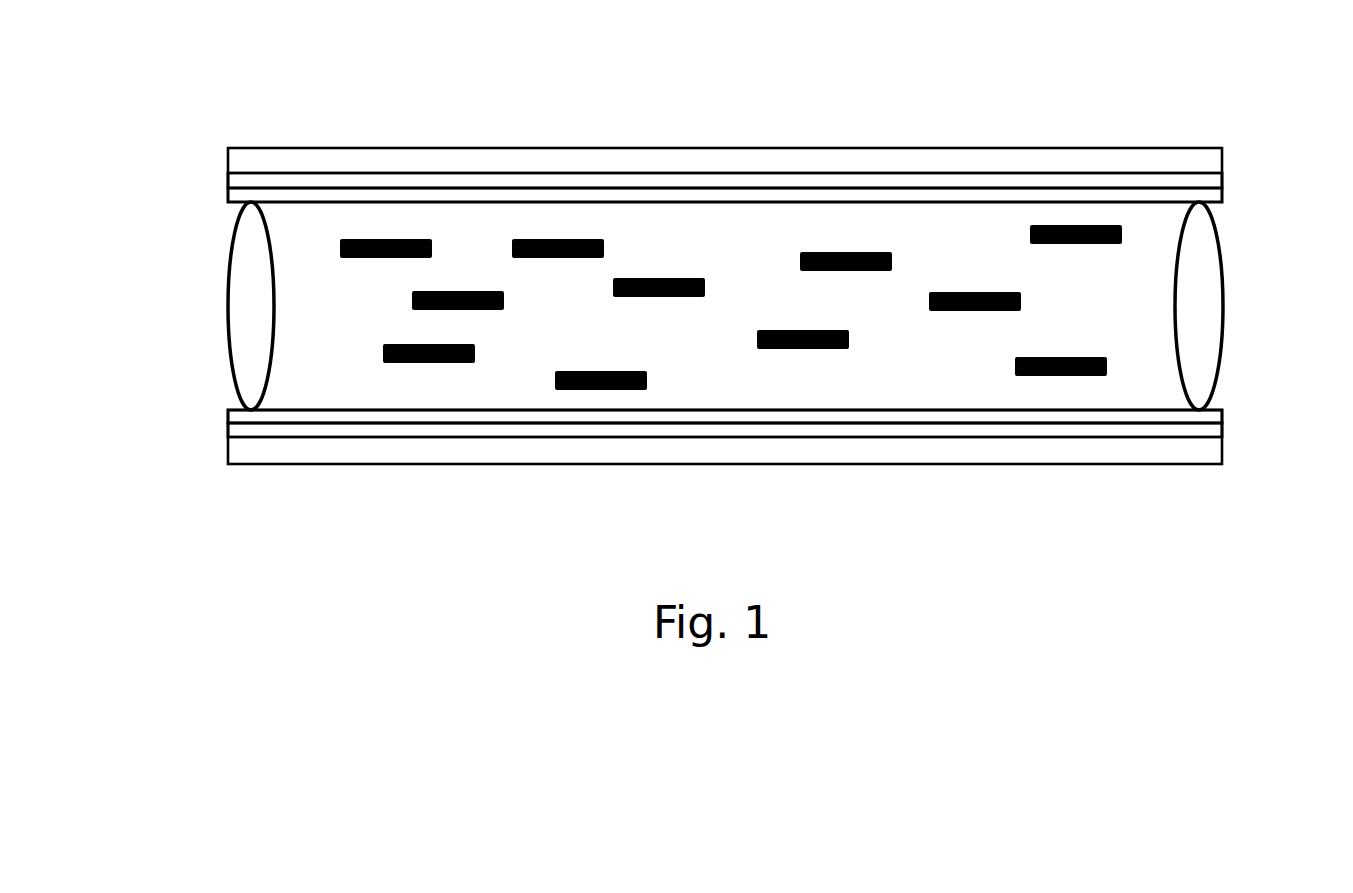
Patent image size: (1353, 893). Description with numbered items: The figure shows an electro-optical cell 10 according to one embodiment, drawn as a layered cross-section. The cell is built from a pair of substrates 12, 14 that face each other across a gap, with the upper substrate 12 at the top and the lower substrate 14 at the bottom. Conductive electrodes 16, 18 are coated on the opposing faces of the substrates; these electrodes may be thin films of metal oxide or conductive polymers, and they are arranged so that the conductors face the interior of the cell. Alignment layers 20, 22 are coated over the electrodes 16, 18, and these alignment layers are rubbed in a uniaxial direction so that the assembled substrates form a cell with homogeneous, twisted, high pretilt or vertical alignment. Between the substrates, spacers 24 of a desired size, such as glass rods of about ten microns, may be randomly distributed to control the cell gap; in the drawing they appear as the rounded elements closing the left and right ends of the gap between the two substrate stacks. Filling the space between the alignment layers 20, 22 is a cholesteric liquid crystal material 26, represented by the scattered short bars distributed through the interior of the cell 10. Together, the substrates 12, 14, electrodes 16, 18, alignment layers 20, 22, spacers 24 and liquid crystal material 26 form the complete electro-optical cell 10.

The electro-optical cell 10 is at (691, 307).
The substrate 12 is at (648, 163).
The substrate 14 is at (641, 452).
The conductive electrode 16 is at (228, 190).
The conductive electrode 18 is at (227, 433).
The alignment layer 20 is at (235, 201).
The alignment layer 22 is at (227, 410).
The spacers 24 is at (1222, 280).
The cholesteric liquid crystal material 26 is at (1018, 385).